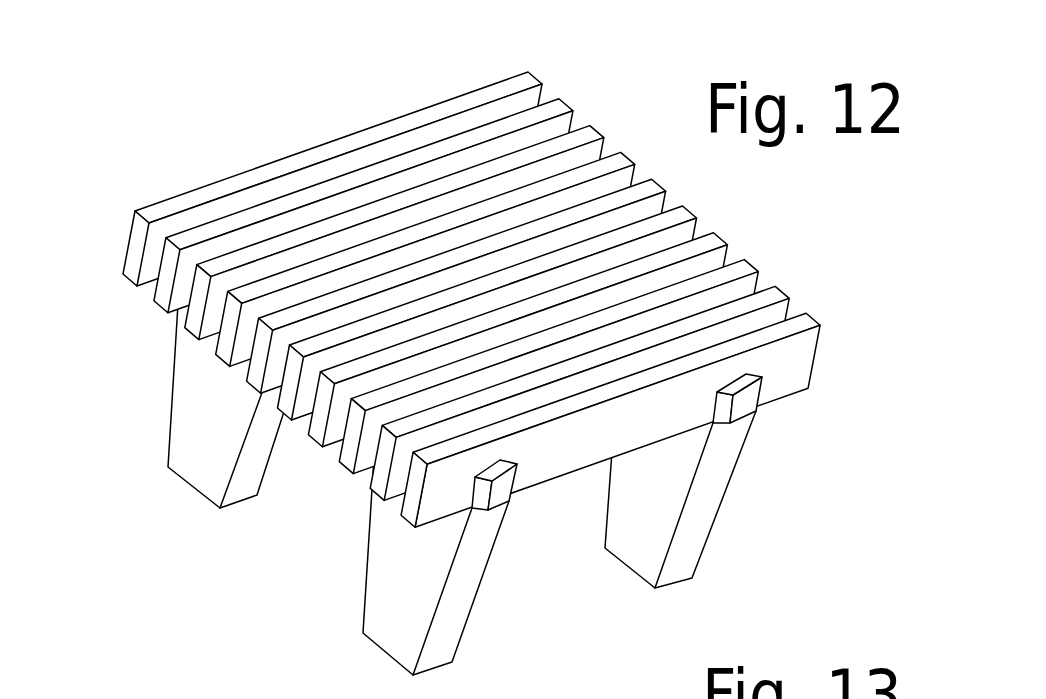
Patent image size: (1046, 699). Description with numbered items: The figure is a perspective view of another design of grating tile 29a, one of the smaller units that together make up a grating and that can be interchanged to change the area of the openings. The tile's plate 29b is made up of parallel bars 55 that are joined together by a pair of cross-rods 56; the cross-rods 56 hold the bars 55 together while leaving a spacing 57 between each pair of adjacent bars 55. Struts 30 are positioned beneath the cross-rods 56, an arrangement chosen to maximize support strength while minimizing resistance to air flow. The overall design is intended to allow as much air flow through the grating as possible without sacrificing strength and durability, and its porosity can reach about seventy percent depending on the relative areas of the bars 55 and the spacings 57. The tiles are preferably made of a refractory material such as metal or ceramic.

The grating tile 29a is at (426, 349).
The plate 29b is at (426, 268).
The strut 30 is at (203, 473).
The bar 55 is at (273, 167).
The cross-rod 56 is at (502, 495).
The spacing 57 is at (533, 95).